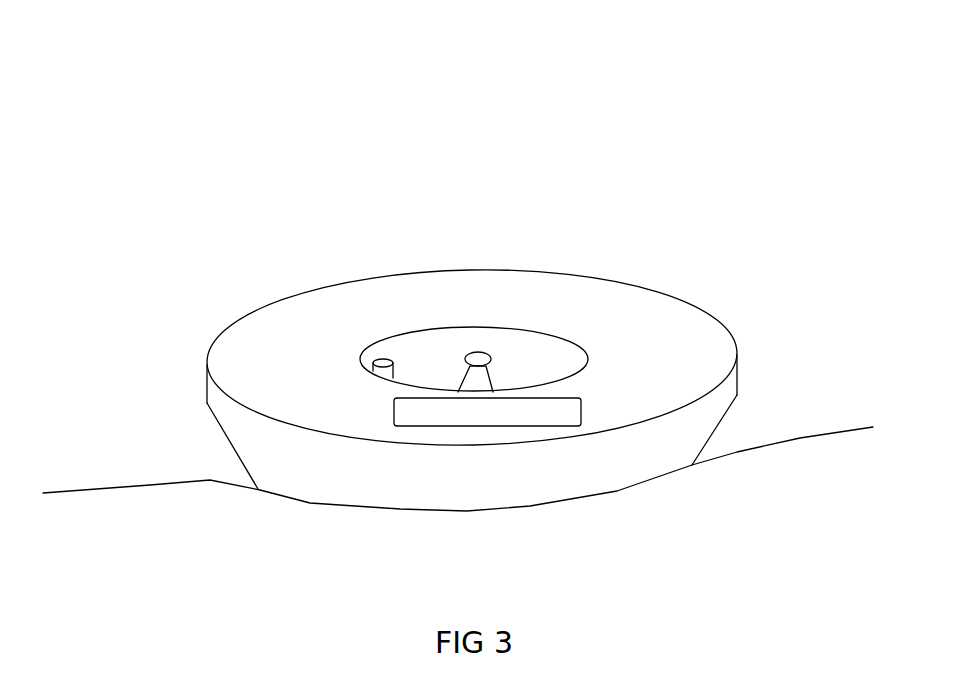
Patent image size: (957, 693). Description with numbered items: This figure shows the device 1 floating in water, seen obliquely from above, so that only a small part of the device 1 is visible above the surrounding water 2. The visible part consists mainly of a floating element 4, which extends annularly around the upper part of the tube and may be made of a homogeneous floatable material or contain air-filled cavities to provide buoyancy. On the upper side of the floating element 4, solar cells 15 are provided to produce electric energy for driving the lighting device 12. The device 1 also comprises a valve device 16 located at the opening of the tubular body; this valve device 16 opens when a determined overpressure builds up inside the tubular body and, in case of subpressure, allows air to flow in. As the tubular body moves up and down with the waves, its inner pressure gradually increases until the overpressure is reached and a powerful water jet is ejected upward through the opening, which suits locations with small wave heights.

The device 1 is at (380, 173).
The surrounding water 2 is at (827, 492).
The floating element 4 is at (260, 352).
The lighting device 12 is at (385, 365).
The solar cells 15 is at (565, 413).
The valve device 16 is at (484, 354).